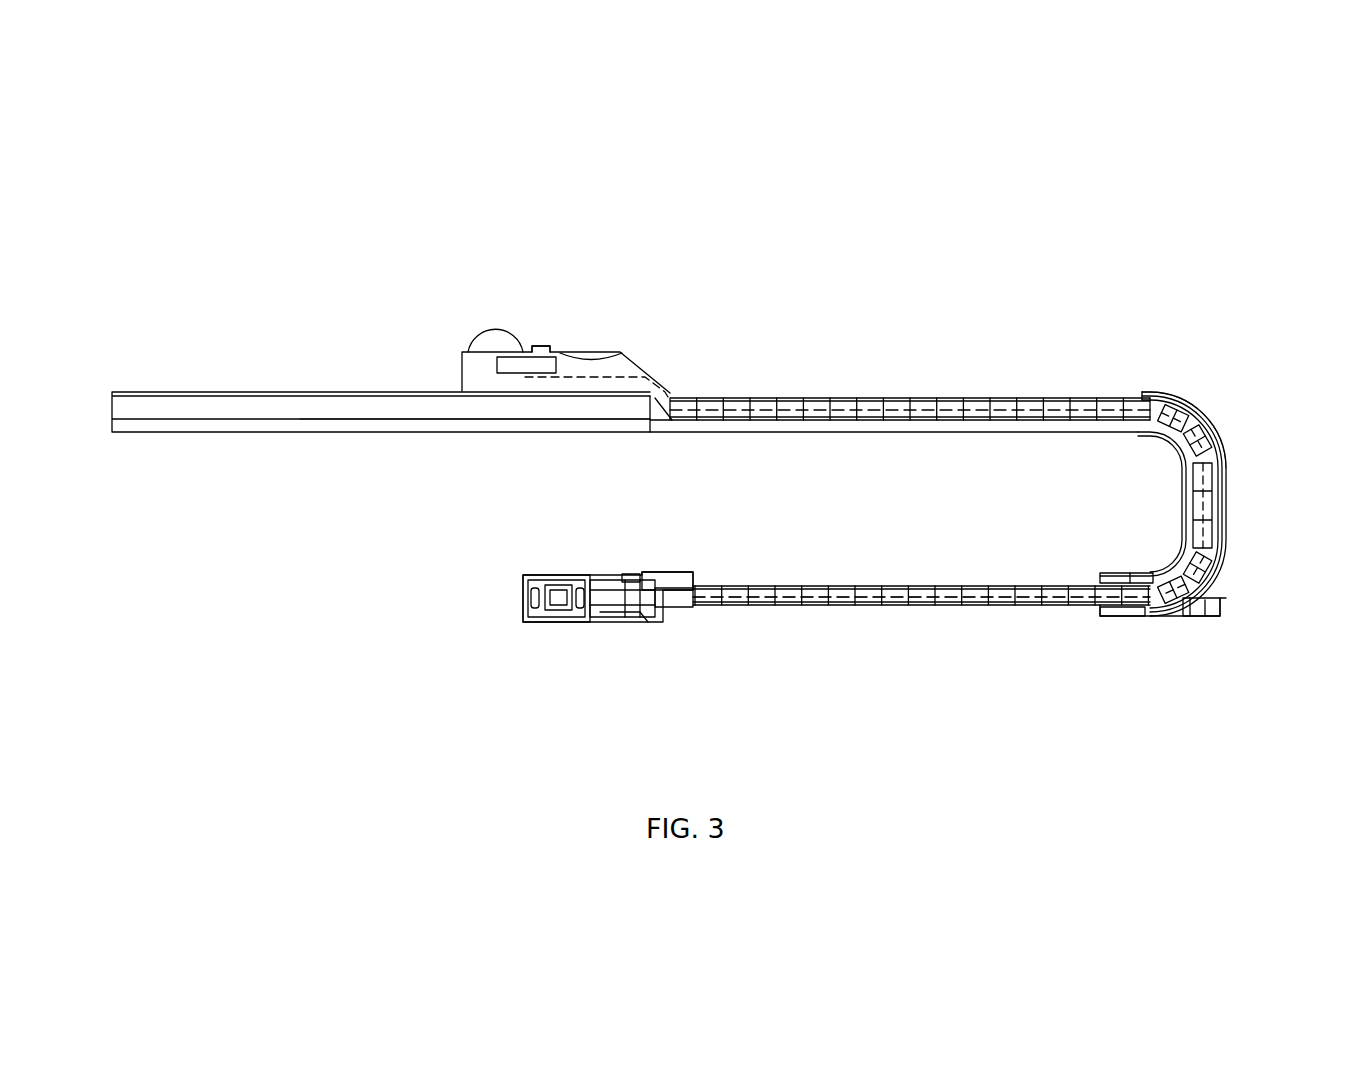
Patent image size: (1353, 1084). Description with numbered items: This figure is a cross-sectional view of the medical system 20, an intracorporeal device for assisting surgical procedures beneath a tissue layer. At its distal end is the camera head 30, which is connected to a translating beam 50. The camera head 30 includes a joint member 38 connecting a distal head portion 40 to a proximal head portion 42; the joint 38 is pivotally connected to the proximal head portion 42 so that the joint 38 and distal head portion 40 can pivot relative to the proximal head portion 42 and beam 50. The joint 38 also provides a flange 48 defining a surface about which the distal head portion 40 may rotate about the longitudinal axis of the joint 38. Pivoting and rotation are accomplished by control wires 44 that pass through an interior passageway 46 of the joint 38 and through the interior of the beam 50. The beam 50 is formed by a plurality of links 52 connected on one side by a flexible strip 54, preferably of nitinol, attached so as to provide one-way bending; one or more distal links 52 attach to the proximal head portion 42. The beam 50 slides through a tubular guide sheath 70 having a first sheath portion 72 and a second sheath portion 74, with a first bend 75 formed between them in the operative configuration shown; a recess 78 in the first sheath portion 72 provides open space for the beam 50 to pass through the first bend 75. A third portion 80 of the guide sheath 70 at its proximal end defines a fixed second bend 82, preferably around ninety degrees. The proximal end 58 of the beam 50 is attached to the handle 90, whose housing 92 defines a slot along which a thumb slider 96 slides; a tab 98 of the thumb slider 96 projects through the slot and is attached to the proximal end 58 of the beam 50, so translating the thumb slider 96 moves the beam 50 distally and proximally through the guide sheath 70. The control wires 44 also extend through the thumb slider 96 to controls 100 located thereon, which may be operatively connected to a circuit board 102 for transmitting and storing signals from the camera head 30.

The medical system 20 is at (870, 248).
The camera head 30 is at (580, 556).
The joint member 38 is at (605, 617).
The distal head portion 40 is at (530, 622).
The proximal head portion 42 is at (688, 574).
The control wires 44 is at (950, 605).
The interior passageway 46 is at (640, 614).
The flange 48 is at (578, 610).
The translating beam 50 is at (990, 575).
The links 52 is at (815, 597).
The flexible strip 54 is at (880, 590).
The proximal end of the beam 58 is at (690, 414).
The guide sheath 70 is at (1258, 492).
The first sheath portion 72 is at (1113, 617).
The second sheath portion 74 is at (1235, 560).
The first bend 75 is at (1205, 605).
The recess 78 is at (1133, 573).
The third portion of the guide sheath 80 is at (1142, 392).
The second bend 82 is at (1200, 412).
The handle 90 is at (268, 386).
The housing 92 is at (565, 432).
The thumb slider 96 is at (556, 352).
The tab 98 is at (668, 393).
The controls 100 is at (491, 324).
The circuit board 102 is at (497, 360).